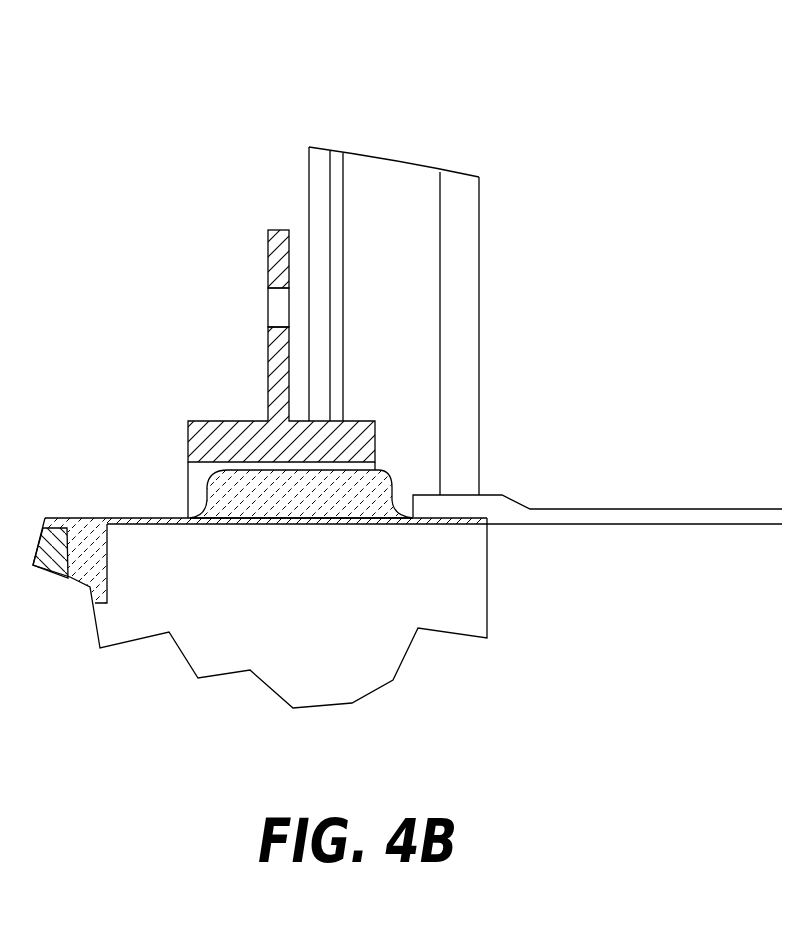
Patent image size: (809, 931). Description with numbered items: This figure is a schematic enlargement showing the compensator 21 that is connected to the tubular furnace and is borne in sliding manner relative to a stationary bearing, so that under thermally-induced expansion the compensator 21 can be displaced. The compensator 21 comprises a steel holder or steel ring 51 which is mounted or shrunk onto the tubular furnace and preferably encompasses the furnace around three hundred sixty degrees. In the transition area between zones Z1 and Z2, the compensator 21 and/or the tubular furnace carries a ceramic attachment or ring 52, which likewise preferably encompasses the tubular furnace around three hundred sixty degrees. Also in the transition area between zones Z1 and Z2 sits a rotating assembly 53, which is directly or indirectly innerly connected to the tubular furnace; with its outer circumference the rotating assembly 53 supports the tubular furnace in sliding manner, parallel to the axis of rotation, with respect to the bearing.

The compensator 21 is at (647, 44).
The steel holder or steel ring 51 is at (258, 319).
The ceramic attachment or ring 52 is at (399, 466).
The rotating assembly 53 is at (462, 236).
The zone Z1 is at (673, 500).
The zone Z2 is at (401, 630).